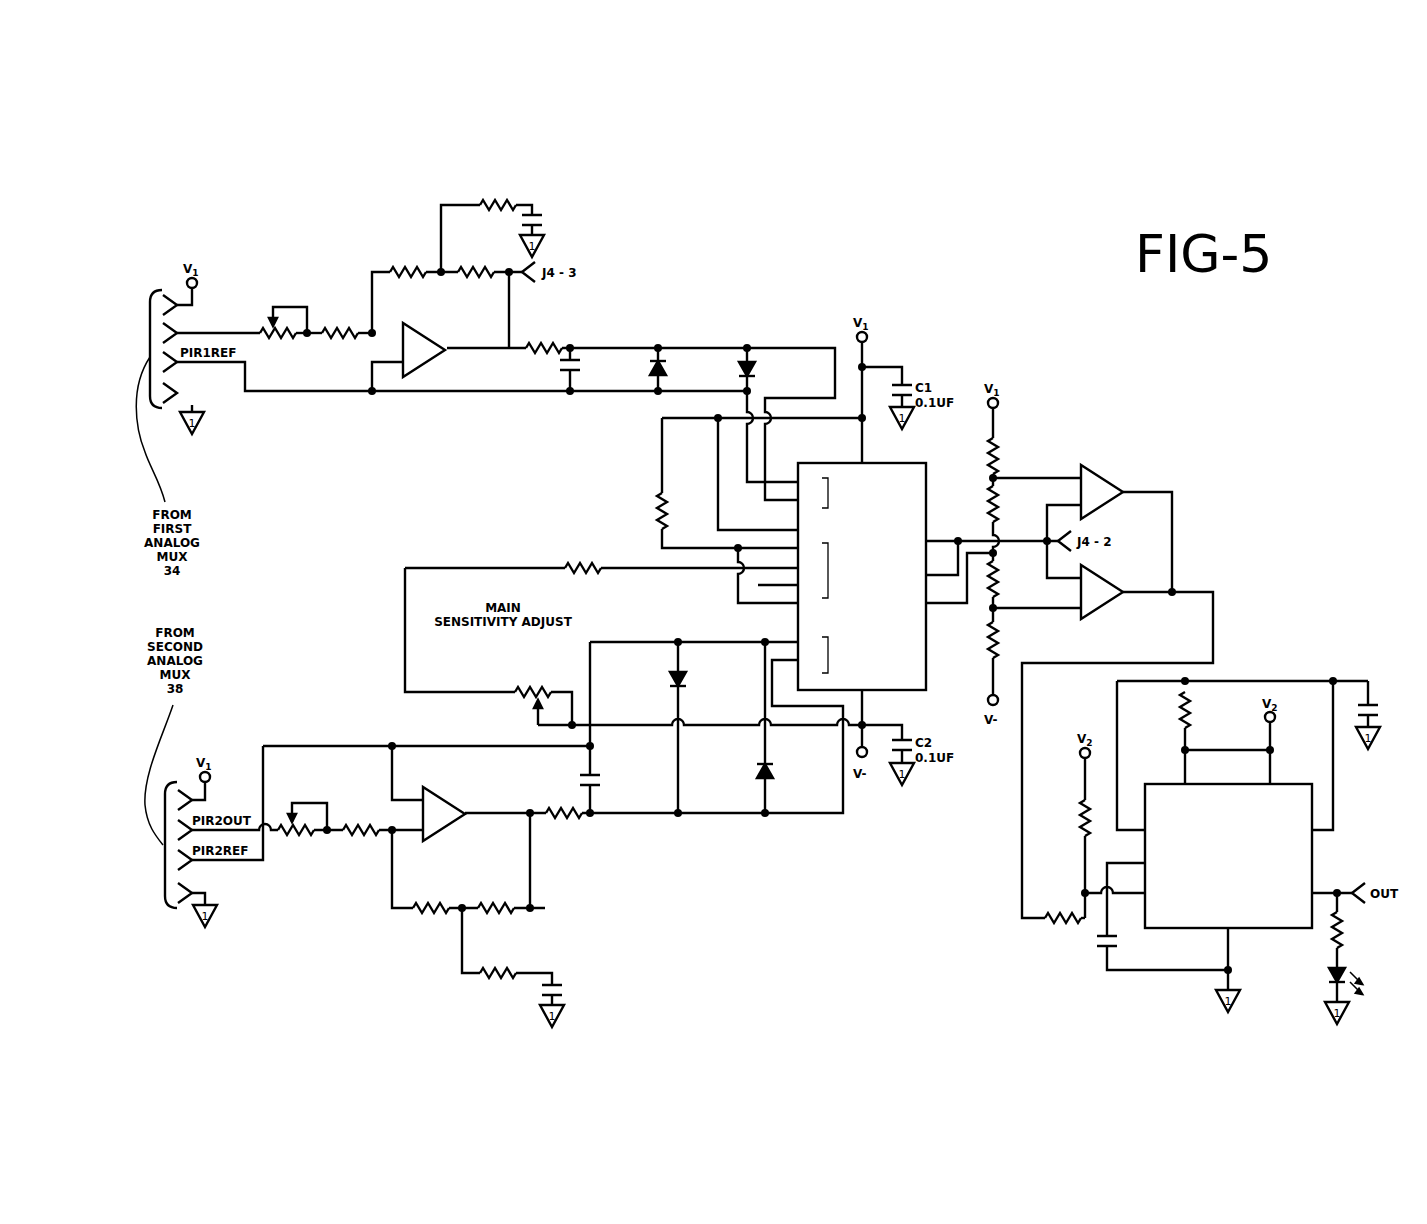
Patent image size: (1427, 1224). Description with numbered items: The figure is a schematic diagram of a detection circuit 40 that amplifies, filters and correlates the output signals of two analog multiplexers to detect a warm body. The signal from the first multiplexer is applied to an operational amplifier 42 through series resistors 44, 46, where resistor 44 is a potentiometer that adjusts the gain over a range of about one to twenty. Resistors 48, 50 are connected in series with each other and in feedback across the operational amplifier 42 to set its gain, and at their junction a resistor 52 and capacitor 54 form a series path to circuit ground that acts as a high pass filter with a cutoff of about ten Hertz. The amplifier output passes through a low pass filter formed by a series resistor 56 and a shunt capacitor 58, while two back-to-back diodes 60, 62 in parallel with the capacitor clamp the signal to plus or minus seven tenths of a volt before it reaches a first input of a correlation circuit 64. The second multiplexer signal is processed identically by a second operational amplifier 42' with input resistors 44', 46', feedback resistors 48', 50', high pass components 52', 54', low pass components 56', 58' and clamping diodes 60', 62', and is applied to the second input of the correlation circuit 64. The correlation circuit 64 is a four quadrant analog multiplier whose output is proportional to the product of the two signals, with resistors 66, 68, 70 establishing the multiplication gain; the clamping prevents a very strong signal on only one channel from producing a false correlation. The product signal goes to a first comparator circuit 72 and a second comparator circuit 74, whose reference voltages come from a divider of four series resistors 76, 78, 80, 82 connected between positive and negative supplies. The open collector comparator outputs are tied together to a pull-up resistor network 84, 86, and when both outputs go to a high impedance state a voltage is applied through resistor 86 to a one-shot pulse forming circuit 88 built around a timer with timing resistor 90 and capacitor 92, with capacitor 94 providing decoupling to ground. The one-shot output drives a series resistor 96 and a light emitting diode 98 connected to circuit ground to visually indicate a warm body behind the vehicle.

The detection circuit 40 is at (958, 309).
The operational amplifier 42 is at (444, 381).
The resistor 44 is at (281, 315).
The resistor 46 is at (339, 311).
The resistor 48 is at (380, 251).
The resistor 50 is at (442, 249).
The resistor 52 is at (458, 185).
The capacitor 54 is at (580, 220).
The series resistor 56 is at (573, 335).
The shunt capacitor 58 is at (573, 393).
The diode 60 is at (686, 338).
The diode 62 is at (775, 338).
The correlation circuit 64 is at (830, 462).
The resistor 66 is at (657, 505).
The resistor 68 is at (565, 568).
The resistor 70 is at (518, 696).
The first comparator circuit 72 is at (1085, 468).
The second comparator circuit 74 is at (1085, 618).
The resistor 76 is at (993, 430).
The resistor 78 is at (993, 520).
The resistor 80 is at (993, 598).
The resistor 82 is at (993, 662).
The pull-up resistor 84 is at (1045, 925).
The pull-up resistor 86 is at (1083, 812).
The one-shot pulse forming circuit 88 is at (1210, 930).
The timing resistor 90 is at (1190, 710).
The capacitor 92 is at (1368, 705).
The capacitor 94 is at (1106, 965).
The series resistor 96 is at (1345, 943).
The light emitting diode 98 is at (1333, 987).
The operational amplifier 42' is at (446, 786).
The resistor 44' is at (324, 849).
The resistor 46' is at (353, 806).
The resistor 48' is at (390, 930).
The resistor 50' is at (548, 915).
The resistor 52' is at (434, 981).
The capacitor 54' is at (614, 990).
The series resistor 56' is at (538, 799).
The shunt capacitor 58' is at (618, 813).
The diode 60' is at (675, 709).
The diode 62' is at (779, 761).